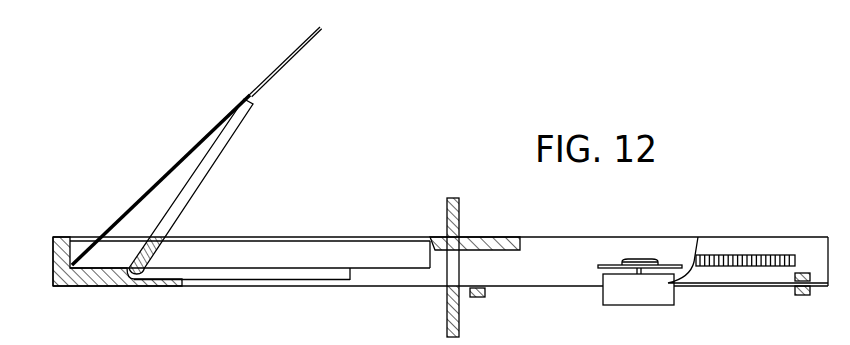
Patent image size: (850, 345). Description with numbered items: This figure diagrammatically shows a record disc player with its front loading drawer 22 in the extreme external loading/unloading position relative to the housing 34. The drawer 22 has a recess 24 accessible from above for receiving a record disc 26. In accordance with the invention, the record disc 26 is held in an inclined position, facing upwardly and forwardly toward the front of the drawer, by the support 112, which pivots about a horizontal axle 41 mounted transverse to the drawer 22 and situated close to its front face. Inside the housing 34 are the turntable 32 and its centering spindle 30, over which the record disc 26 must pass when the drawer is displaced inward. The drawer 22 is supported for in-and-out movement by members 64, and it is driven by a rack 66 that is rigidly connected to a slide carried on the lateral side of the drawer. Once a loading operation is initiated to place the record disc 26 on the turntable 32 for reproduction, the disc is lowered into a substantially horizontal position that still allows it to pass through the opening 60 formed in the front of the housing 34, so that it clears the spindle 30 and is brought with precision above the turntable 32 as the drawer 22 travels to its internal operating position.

The drawer 22 is at (207, 288).
The recess 24 is at (334, 265).
The record disc 26 is at (158, 182).
The centering spindle 30 is at (659, 262).
The turntable 32 is at (603, 265).
The housing 34 is at (447, 308).
The axle 41 is at (130, 286).
The opening 60 is at (447, 228).
The members 64 is at (485, 293).
The rack 66 is at (748, 262).
The support 112 is at (205, 177).